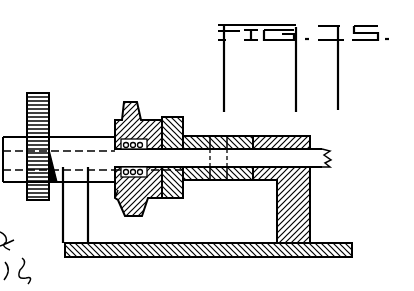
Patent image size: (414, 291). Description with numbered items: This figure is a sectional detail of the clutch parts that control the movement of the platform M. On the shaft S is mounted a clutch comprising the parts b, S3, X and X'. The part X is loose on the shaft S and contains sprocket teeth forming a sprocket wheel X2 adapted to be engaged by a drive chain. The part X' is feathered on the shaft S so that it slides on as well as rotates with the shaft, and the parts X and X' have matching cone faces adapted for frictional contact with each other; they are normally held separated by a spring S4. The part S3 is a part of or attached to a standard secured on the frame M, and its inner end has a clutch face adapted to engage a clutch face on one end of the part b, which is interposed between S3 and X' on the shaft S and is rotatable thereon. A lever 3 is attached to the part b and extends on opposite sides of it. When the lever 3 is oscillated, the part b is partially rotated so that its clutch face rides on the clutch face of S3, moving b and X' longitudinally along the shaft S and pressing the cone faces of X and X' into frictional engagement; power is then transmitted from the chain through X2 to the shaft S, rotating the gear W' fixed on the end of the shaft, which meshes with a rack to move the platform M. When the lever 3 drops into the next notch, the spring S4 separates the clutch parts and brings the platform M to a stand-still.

The gear W' is at (48, 136).
The shaft S is at (322, 170).
The platform M is at (208, 261).
The clutch part b is at (231, 182).
The clutch part S3 is at (300, 136).
The lever 3 is at (232, 136).
The clutch part X is at (140, 150).
The clutch part X' is at (188, 146).
The sprocket wheel X2 is at (178, 229).
The spring S4 is at (118, 190).